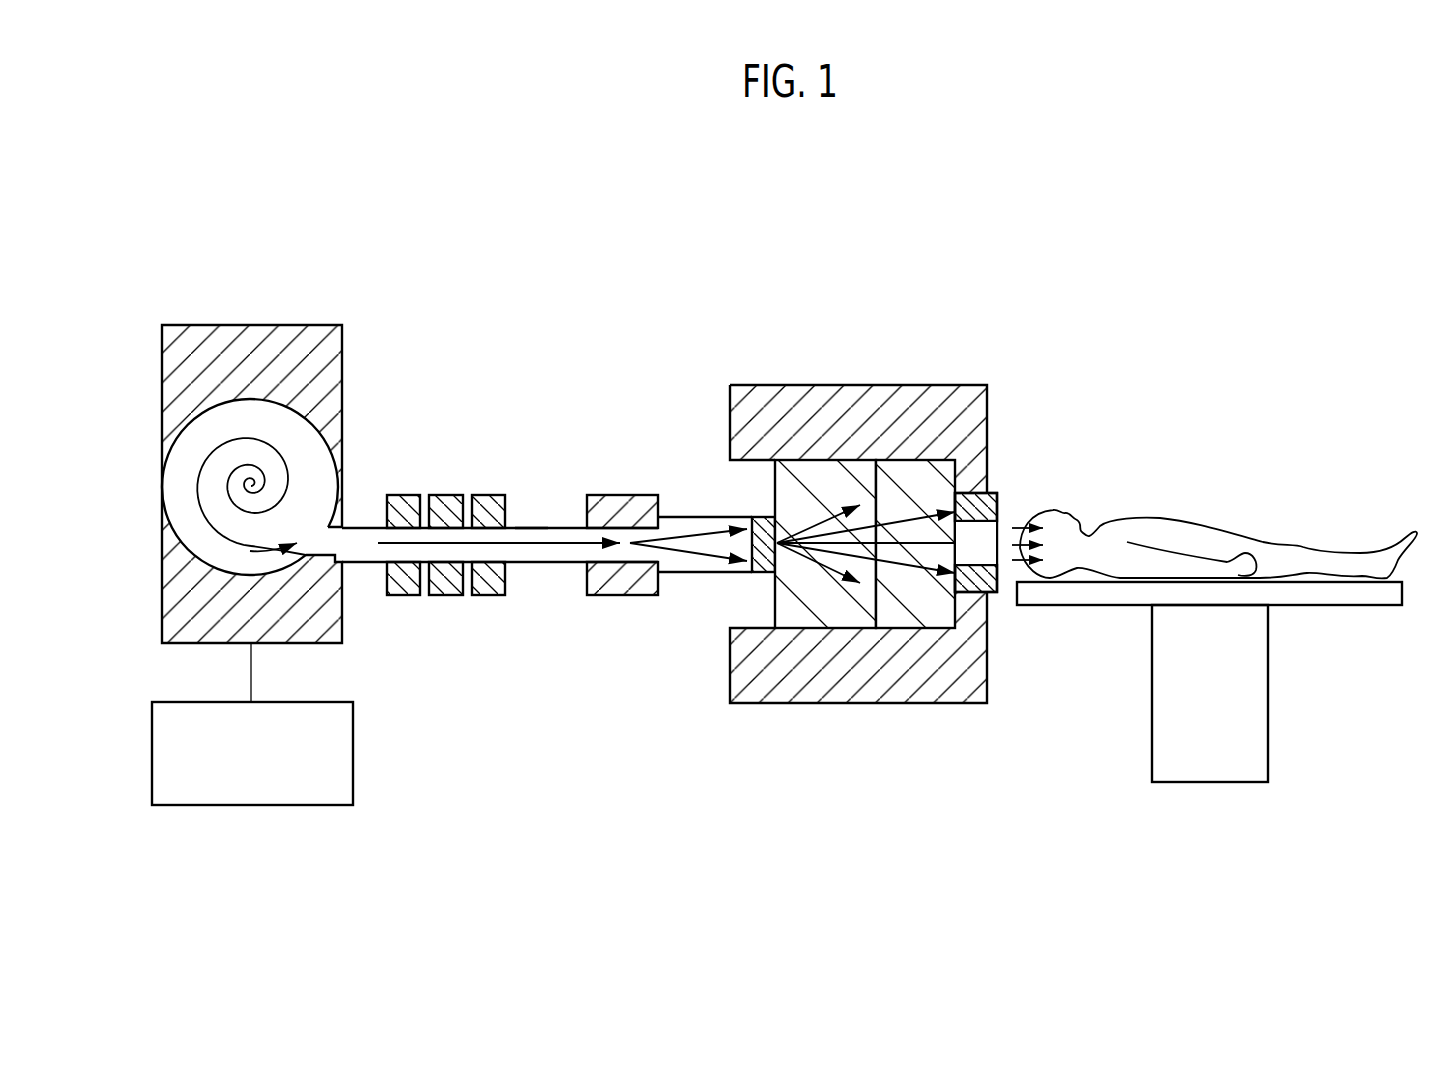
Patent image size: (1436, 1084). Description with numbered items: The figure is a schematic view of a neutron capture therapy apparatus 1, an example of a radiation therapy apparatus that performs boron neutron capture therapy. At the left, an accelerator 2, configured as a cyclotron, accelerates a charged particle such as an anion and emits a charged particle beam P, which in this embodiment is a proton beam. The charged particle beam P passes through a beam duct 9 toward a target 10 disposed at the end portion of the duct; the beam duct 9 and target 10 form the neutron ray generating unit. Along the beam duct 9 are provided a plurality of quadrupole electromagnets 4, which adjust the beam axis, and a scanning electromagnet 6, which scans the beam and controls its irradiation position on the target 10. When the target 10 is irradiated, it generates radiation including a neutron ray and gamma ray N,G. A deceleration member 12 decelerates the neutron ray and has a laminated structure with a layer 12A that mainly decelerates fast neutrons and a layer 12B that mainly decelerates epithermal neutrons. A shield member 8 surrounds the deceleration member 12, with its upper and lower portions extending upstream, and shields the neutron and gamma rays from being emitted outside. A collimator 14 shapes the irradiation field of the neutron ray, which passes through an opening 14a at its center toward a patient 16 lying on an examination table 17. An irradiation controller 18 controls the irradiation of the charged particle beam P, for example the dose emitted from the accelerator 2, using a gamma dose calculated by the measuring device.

The neutron capture therapy apparatus 1 is at (472, 225).
The accelerator 2 is at (258, 338).
The quadrupole electromagnets 4 is at (487, 496).
The scanning electromagnet 6 is at (627, 496).
The shield member 8 is at (755, 695).
The beam duct 9 is at (531, 527).
The target 10 is at (768, 520).
The deceleration member 12 is at (865, 453).
The layer 12A is at (815, 470).
The layer 12B is at (900, 470).
The collimator 14 is at (1018, 594).
The opening 14a is at (994, 560).
The patient 16 is at (1213, 543).
The examination table 17 is at (1327, 594).
The irradiation controller 18 is at (355, 738).
The charged particle beam P is at (250, 551).
The neutron ray and gamma ray N,G is at (907, 544).